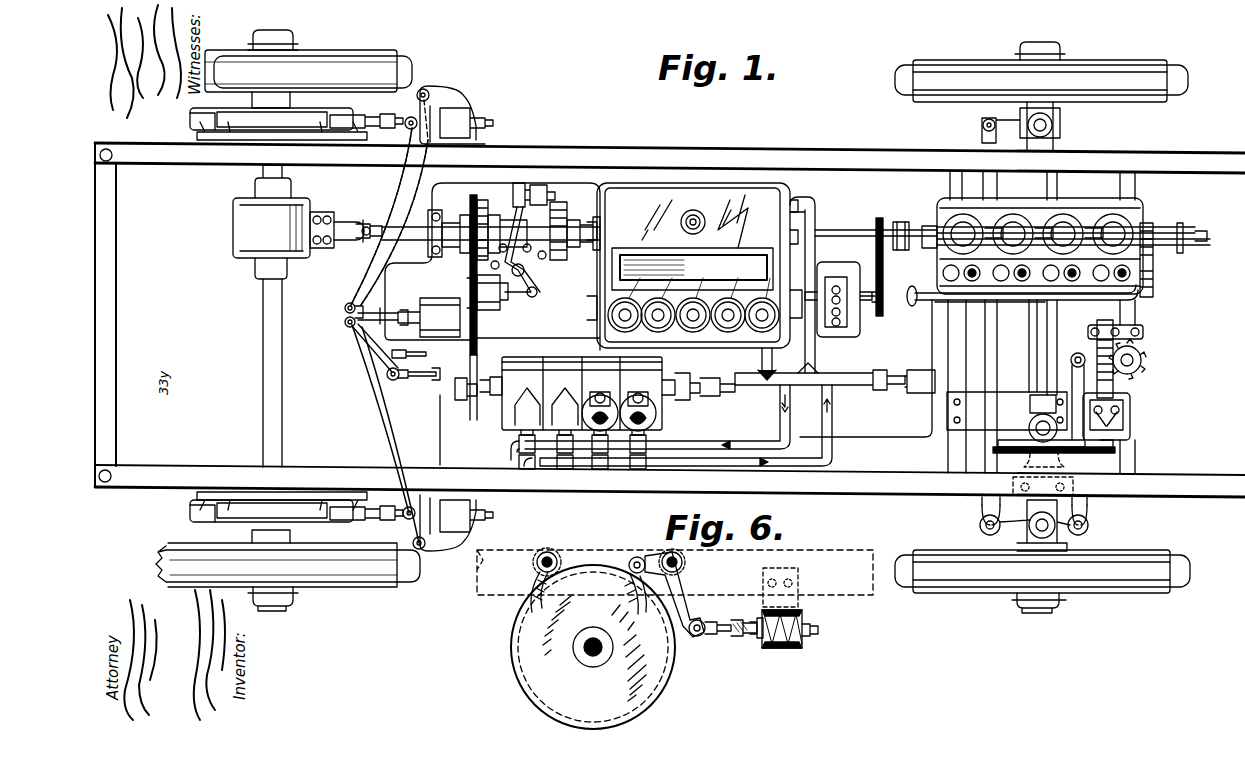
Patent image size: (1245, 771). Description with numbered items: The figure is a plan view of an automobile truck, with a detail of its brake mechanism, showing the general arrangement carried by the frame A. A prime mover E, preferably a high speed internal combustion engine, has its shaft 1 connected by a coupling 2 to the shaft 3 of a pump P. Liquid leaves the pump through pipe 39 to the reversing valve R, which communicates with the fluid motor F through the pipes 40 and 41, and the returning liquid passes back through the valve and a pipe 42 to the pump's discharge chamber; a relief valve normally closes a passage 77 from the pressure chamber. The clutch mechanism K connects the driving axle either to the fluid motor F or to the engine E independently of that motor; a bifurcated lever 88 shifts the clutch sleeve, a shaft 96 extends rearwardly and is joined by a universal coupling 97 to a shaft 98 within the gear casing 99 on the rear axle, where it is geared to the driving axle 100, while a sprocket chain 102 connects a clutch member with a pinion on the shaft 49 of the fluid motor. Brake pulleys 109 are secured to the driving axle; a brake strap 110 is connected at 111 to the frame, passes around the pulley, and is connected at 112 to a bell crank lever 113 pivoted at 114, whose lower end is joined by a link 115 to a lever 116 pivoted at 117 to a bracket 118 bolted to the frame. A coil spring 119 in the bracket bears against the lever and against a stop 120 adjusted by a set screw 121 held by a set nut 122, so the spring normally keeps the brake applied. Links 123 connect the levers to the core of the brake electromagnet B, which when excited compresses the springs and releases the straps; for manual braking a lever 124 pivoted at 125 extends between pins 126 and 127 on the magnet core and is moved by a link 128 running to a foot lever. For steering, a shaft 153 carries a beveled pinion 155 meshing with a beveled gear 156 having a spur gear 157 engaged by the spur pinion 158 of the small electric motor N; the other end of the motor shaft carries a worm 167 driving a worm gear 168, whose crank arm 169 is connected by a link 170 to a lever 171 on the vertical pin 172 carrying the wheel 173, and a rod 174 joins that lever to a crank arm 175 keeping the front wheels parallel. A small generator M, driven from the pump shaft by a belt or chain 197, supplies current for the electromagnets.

In FIG. 1, the engine shaft 1 is at (912, 228).
In FIG. 1, the coupling 2 is at (895, 225).
In FIG. 1, the pump shaft 3 is at (860, 230).
In FIG. 1, the pipe 39 is at (818, 226).
In FIG. 1, the pipe 40 is at (770, 420).
In FIG. 1, the pipe 41 is at (720, 470).
In FIG. 1, the pipe 42 is at (790, 360).
In FIG. 1, the fluid motor shaft 49 is at (478, 425).
In FIG. 1, the passage 77 is at (682, 220).
In FIG. 1, the bifurcated lever 88 is at (528, 272).
In FIG. 1, the shaft 96 is at (406, 232).
In FIG. 1, the universal coupling 97 is at (366, 222).
In FIG. 1, the shaft 98 is at (345, 258).
In FIG. 1, the gear casing 99 is at (235, 245).
In FIG. 1, the driving axle 100 is at (265, 322).
In FIG. 1, the sprocket chain 102 is at (462, 350).
In FIG. 1, the brake pulley 109 is at (200, 114).
In FIG. 6, the brake pulley 109 is at (512, 660).
In FIG. 6, the brake strap 110 is at (540, 600).
In FIG. 6, the connection point 111 is at (549, 556).
In FIG. 6, the connection point 112 is at (640, 556).
In FIG. 6, the bell crank lever 113 is at (688, 588).
In FIG. 6, the pivot 114 is at (684, 562).
In FIG. 1, the link 115 is at (405, 75).
In FIG. 6, the link 115 is at (706, 638).
In FIG. 1, the lever 116 is at (410, 172).
In FIG. 6, the lever 116 is at (752, 640).
In FIG. 1, the pivot 117 is at (410, 553).
In FIG. 1, the bracket 118 is at (475, 540).
In FIG. 6, the bracket 118 is at (795, 648).
In FIG. 6, the coil spring 119 is at (788, 652).
In FIG. 6, the stop 120 is at (802, 622).
In FIG. 6, the set screw 121 is at (818, 630).
In FIG. 6, the set nut 122 is at (805, 640).
In FIG. 1, the links 123 is at (345, 310).
In FIG. 1, the lever 124 is at (395, 358).
In FIG. 1, the pivot 125 is at (395, 370).
In FIG. 1, the pin 126 is at (380, 338).
In FIG. 1, the pin 127 is at (428, 290).
In FIG. 1, the link 128 is at (412, 375).
In FIG. 1, the shaft 153 is at (1035, 418).
In FIG. 1, the beveled pinion 155 is at (1030, 428).
In FIG. 1, the beveled gear 156 is at (990, 438).
In FIG. 1, the spur gear 157 is at (1010, 455).
In FIG. 1, the spur pinion 158 is at (1115, 450).
In FIG. 1, the worm 167 is at (1098, 345).
In FIG. 1, the worm gear 168 is at (1140, 355).
In FIG. 1, the crank arm 169 is at (1080, 360).
In FIG. 1, the link 170 is at (1080, 387).
In FIG. 1, the lever 171 is at (1085, 533).
In FIG. 1, the vertical pin 172 is at (1028, 525).
In FIG. 1, the wheel 173 is at (1000, 570).
In FIG. 1, the rod 174 is at (1010, 372).
In FIG. 1, the crank arm 175 is at (982, 118).
In FIG. 1, the driving belt or chain 197 is at (858, 262).
In FIG. 1, the frame A is at (608, 160).
In FIG. 6, the frame A is at (595, 560).
In FIG. 1, the brake electromagnet B is at (430, 300).
In FIG. 1, the prime mover E is at (1130, 225).
In FIG. 1, the fluid motor F is at (525, 356).
In FIG. 1, the clutch mechanism K is at (500, 182).
In FIG. 1, the generator M is at (860, 290).
In FIG. 1, the electric motor N is at (1128, 405).
In FIG. 1, the pump P is at (718, 178).
In FIG. 1, the reversing valve R is at (840, 425).